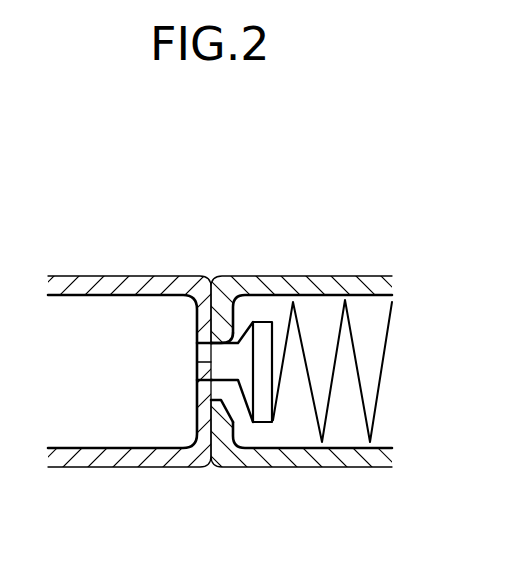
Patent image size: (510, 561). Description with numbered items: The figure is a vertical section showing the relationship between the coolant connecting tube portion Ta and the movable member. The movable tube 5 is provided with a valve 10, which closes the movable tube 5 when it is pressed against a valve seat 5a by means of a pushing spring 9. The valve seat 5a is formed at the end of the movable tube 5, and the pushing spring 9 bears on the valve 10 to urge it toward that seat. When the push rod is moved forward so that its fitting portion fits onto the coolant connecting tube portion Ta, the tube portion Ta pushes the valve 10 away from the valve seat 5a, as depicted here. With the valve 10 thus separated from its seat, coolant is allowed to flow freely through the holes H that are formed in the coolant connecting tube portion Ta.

The coolant connecting tube portion Ta is at (112, 276).
The movable tube 5 is at (255, 331).
The valve seat 5a is at (239, 340).
The holes H is at (200, 390).
The pushing spring 9 is at (360, 386).
The valve 10 is at (244, 418).